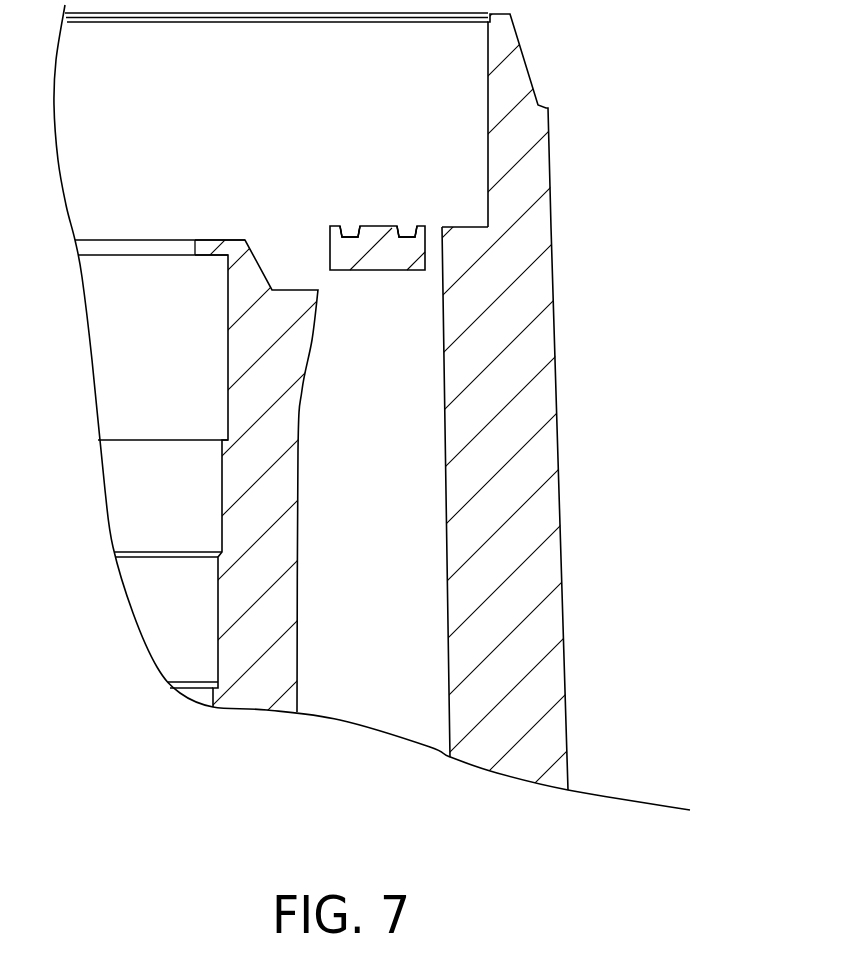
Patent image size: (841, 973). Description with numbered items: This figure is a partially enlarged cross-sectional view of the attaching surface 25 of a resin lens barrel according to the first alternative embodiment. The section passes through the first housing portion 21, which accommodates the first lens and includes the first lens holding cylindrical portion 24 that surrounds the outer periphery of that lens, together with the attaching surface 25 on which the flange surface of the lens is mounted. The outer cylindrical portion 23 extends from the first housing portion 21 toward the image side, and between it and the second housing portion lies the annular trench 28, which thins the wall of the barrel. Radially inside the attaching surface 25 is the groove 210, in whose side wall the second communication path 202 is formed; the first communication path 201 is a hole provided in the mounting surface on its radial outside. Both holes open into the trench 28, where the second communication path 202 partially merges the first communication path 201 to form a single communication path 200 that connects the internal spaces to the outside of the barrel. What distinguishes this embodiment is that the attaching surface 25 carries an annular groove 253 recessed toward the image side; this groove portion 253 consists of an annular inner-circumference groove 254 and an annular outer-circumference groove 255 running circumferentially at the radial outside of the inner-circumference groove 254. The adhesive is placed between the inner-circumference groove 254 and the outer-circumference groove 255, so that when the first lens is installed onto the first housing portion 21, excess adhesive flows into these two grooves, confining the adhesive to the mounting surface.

The first housing portion 21 is at (477, 142).
The outer cylindrical portion 23 is at (532, 583).
The first lens holding cylindrical portion 24 is at (540, 142).
The attaching surface 25 is at (337, 226).
The annular trench 28 is at (403, 492).
The communication path 200 is at (400, 315).
The first communication path 201 is at (432, 258).
The second communication path 202 is at (323, 280).
The groove 210 is at (287, 255).
The annular groove 253 is at (345, 148).
The inner-circumference groove 254 is at (352, 230).
The outer-circumference groove 255 is at (403, 230).